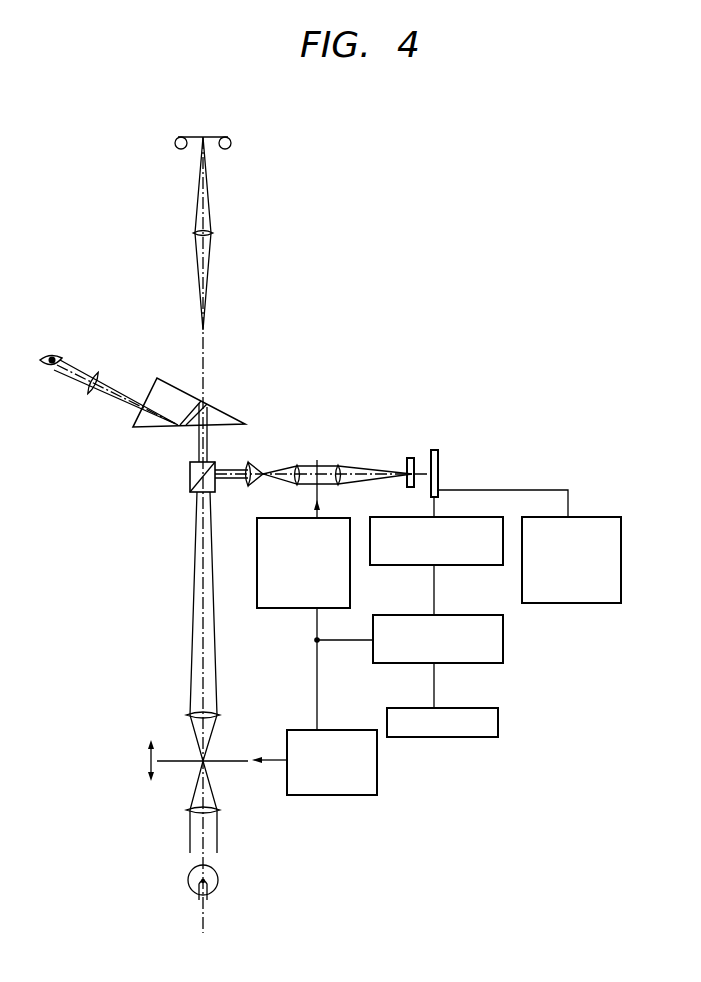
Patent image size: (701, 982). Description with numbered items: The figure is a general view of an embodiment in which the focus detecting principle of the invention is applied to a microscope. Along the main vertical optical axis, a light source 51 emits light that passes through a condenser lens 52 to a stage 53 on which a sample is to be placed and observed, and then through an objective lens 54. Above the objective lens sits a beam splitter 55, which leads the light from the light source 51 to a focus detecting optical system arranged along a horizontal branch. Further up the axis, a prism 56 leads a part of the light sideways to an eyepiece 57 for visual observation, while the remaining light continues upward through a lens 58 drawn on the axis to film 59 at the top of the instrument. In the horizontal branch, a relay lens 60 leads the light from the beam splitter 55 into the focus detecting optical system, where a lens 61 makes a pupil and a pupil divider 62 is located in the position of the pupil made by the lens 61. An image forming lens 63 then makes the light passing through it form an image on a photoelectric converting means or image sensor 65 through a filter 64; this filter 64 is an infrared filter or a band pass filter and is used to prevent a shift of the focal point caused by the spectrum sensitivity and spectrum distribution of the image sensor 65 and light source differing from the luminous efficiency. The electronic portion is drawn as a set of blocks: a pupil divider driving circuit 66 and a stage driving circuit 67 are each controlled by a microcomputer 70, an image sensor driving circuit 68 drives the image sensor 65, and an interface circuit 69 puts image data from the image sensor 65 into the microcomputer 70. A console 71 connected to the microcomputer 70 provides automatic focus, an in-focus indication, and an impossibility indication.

The light source 51 is at (218, 873).
The condenser lens 52 is at (220, 811).
The stage 53 is at (170, 763).
The objective lens 54 is at (190, 713).
The beam splitter 55 is at (190, 476).
The prism 56 is at (223, 411).
The eyepiece 57 is at (88, 391).
The imaging lens 58 is at (193, 233).
The film 59 is at (193, 136).
The relay lens 60 is at (249, 462).
The lens for making a pupil 61 is at (295, 465).
The pupil divider 62 is at (317, 465).
The image forming lens 63 is at (340, 465).
The filter 64 is at (411, 458).
The image sensor 65 is at (438, 456).
The pupil divider driving circuit 66 is at (257, 576).
The stage driving circuit 67 is at (303, 730).
The image sensor driving circuit 68 is at (568, 517).
The interface circuit 69 is at (457, 565).
The microcomputer 70 is at (413, 615).
The console 71 is at (420, 737).